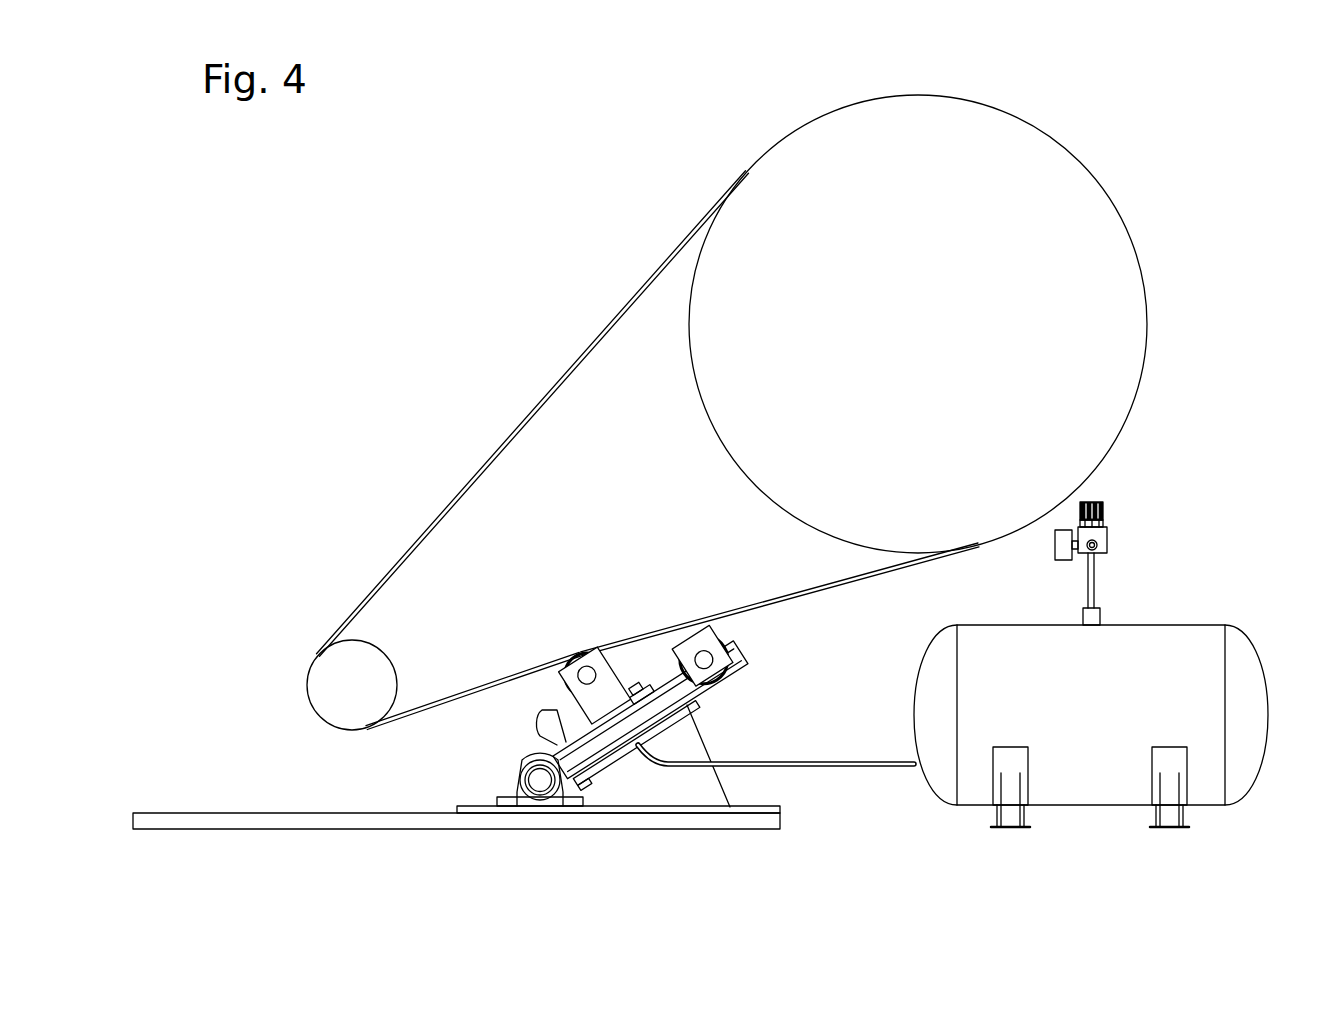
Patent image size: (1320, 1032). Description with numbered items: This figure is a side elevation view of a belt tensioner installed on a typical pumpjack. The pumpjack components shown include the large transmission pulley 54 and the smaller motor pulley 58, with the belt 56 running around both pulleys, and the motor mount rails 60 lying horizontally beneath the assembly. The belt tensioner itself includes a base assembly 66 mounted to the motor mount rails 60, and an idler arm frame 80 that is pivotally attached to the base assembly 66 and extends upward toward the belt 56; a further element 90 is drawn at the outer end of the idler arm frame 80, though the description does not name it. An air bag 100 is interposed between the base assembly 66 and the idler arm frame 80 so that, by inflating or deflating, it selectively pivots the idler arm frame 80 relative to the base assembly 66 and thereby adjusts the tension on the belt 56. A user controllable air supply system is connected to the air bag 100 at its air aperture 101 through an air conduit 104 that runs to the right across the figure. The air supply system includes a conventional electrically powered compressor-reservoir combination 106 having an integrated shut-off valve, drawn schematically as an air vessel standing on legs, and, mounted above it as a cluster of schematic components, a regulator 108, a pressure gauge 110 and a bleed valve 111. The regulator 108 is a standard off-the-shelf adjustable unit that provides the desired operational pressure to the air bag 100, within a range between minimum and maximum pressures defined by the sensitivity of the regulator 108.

The transmission pulley 54 is at (1057, 179).
The belt 56 is at (398, 560).
The motor pulley 58 is at (345, 688).
The motor mount rails 60 is at (340, 820).
The base assembly 66 is at (725, 788).
The idler arm frame 80 is at (697, 700).
The pulley 90 is at (732, 637).
The air bag 100 is at (633, 677).
The air aperture 101 is at (637, 752).
The air conduit 104 is at (867, 766).
The compressor-reservoir combination 106 is at (1130, 648).
The regulator 108 is at (1100, 500).
The pressure gauge 110 is at (1103, 508).
The bleed valve 111 is at (1105, 516).